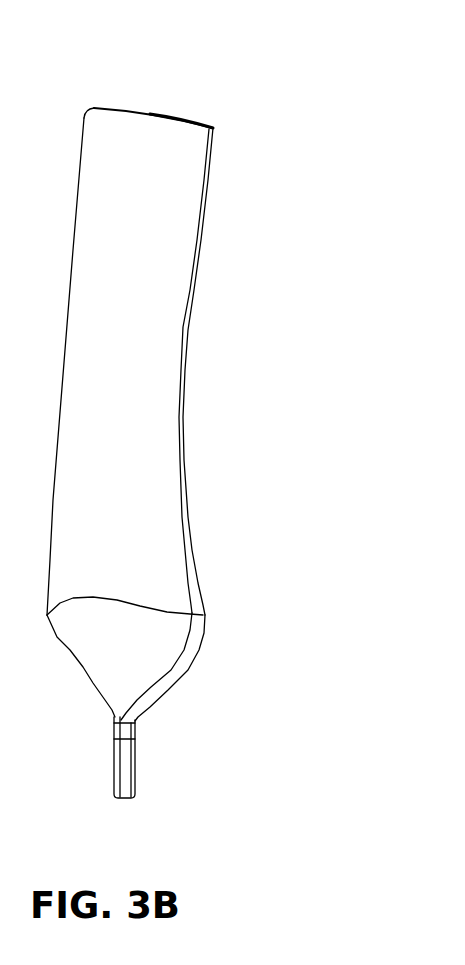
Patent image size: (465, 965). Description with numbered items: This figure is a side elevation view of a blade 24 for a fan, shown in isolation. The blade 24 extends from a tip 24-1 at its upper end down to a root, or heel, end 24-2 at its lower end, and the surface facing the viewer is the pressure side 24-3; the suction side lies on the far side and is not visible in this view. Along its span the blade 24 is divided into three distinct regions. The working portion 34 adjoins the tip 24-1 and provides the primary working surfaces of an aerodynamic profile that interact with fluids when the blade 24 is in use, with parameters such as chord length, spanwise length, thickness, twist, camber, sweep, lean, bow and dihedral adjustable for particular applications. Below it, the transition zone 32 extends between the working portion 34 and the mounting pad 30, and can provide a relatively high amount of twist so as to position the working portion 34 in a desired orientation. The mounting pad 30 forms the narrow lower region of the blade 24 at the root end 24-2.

The blade 24 is at (170, 422).
The tip 24-1 is at (112, 113).
The root end 24-2 is at (127, 804).
The pressure side 24-3 is at (175, 141).
The working portion 34 is at (174, 312).
The transition zone 32 is at (217, 615).
The mounting pad 30 is at (116, 775).